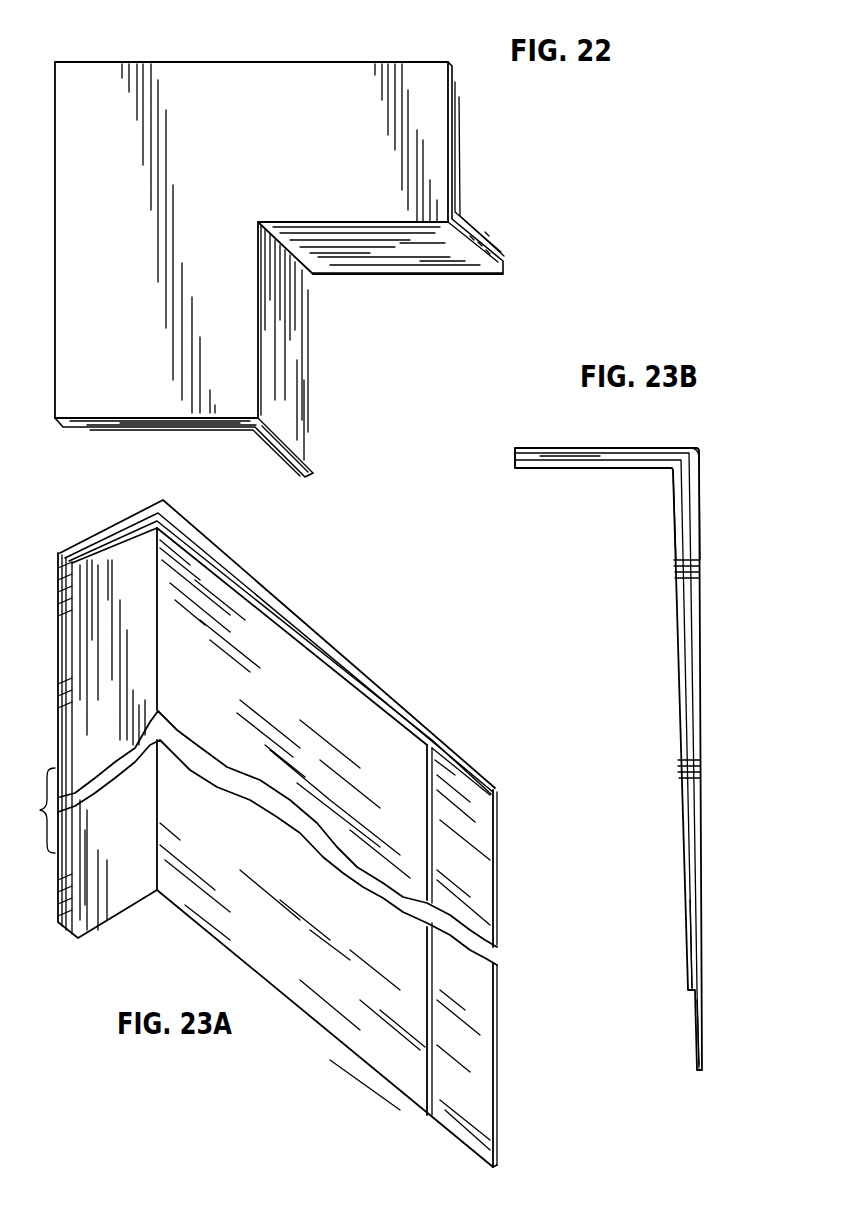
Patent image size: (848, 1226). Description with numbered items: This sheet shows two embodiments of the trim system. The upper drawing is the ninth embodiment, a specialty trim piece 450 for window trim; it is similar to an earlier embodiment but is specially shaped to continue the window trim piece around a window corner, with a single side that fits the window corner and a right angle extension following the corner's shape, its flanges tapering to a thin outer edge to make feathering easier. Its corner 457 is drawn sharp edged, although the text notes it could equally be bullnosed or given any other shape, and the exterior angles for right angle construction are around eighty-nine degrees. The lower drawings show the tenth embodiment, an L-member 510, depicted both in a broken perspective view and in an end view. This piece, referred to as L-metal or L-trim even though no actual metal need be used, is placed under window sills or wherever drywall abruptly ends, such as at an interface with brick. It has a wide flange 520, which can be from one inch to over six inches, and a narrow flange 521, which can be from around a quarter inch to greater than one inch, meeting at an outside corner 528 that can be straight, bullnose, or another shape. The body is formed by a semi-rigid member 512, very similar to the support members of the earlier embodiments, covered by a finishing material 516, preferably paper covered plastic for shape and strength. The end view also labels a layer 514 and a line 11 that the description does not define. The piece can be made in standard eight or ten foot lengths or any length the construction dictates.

In FIG. 22, the specialty trim piece 450 is at (197, 62).
In FIG. 22, the corner 457 is at (317, 283).
In FIG. 23A, the L-member 510 is at (73, 545).
In FIG. 23B, the L-member 510 is at (698, 638).
In FIG. 23B, the narrow flange 521 is at (557, 448).
In FIG. 23B, the wall panel 11 is at (585, 448).
In FIG. 23B, the outside corner 528 is at (699, 450).
In FIG. 23B, the semi-rigid member 512 is at (700, 511).
In FIG. 23B, the inner layer 514 is at (674, 530).
In FIG. 23B, the wide flange 520 is at (701, 926).
In FIG. 23B, the finishing material 516 is at (700, 1046).